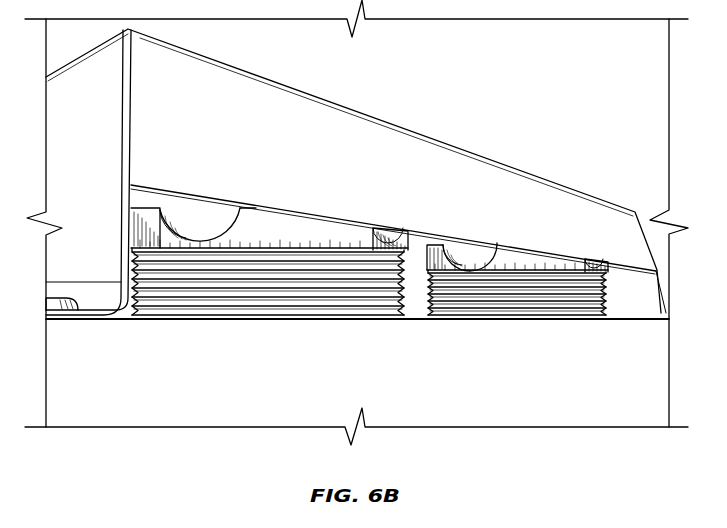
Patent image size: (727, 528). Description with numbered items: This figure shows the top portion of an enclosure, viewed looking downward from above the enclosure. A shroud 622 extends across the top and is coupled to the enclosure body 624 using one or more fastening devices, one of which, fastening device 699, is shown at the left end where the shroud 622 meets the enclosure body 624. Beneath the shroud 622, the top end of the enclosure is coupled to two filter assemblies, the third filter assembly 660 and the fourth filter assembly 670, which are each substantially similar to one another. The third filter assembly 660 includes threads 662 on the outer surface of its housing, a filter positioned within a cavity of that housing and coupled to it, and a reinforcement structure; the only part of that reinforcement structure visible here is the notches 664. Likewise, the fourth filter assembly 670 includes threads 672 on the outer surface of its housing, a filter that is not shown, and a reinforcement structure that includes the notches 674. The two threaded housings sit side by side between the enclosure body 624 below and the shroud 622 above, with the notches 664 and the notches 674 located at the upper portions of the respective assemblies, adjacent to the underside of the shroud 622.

The shroud 622 is at (406, 128).
The enclosure body 624 is at (282, 400).
The filter assembly 3 660 is at (269, 260).
The threads 3 662 is at (191, 300).
The notches 3 664 is at (180, 233).
The filter assembly 4 670 is at (528, 284).
The threads 4 672 is at (472, 305).
The notches 4 674 is at (458, 248).
The fastening device 699 is at (56, 297).